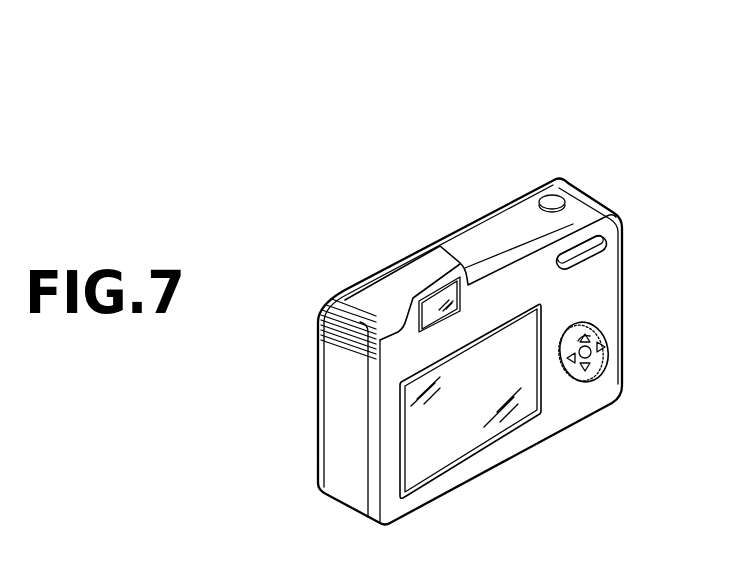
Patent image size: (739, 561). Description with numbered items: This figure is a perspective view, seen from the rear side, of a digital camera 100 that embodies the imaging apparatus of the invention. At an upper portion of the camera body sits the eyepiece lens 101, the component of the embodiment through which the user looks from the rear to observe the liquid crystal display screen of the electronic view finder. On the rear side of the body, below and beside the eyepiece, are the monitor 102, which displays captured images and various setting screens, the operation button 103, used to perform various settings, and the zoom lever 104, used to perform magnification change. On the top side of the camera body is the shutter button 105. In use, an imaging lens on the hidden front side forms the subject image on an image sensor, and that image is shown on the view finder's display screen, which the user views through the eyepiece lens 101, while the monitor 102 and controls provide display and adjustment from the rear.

The digital camera 100 is at (379, 175).
The eyepiece lens 101 is at (428, 304).
The monitor 102 is at (500, 427).
The operation button 103 is at (610, 354).
The zoom lever 104 is at (609, 245).
The shutter button 105 is at (549, 198).